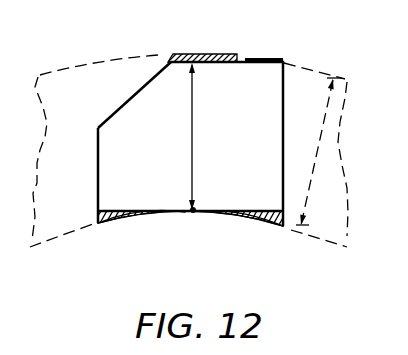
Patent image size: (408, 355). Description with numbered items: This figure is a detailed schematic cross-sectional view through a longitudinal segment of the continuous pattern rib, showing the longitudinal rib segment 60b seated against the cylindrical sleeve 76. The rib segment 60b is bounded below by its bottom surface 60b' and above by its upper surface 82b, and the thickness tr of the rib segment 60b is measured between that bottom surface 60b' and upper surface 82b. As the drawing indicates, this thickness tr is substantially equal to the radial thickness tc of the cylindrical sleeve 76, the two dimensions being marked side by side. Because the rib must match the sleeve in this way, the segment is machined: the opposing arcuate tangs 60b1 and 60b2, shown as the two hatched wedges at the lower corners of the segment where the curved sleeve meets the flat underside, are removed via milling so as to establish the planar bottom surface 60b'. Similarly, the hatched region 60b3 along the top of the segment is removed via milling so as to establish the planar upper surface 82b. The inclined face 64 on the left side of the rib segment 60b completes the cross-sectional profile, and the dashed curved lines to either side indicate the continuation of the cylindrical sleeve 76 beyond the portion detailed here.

The cylindrical sleeve 76 is at (102, 109).
The inclined surface of rub strip 64 is at (128, 96).
The longitudinal rib segment 60b is at (190, 144).
The region removed via milling 60b3 is at (199, 55).
The upper surface 82b is at (264, 60).
The bottom surface 60b' is at (193, 198).
The arcuate tang 60b1 is at (119, 223).
The arcuate tang 60b2 is at (262, 226).
The thickness of the longitudinal rib section tr is at (204, 138).
The radial thickness of the cylindrical sleeve tc is at (319, 151).